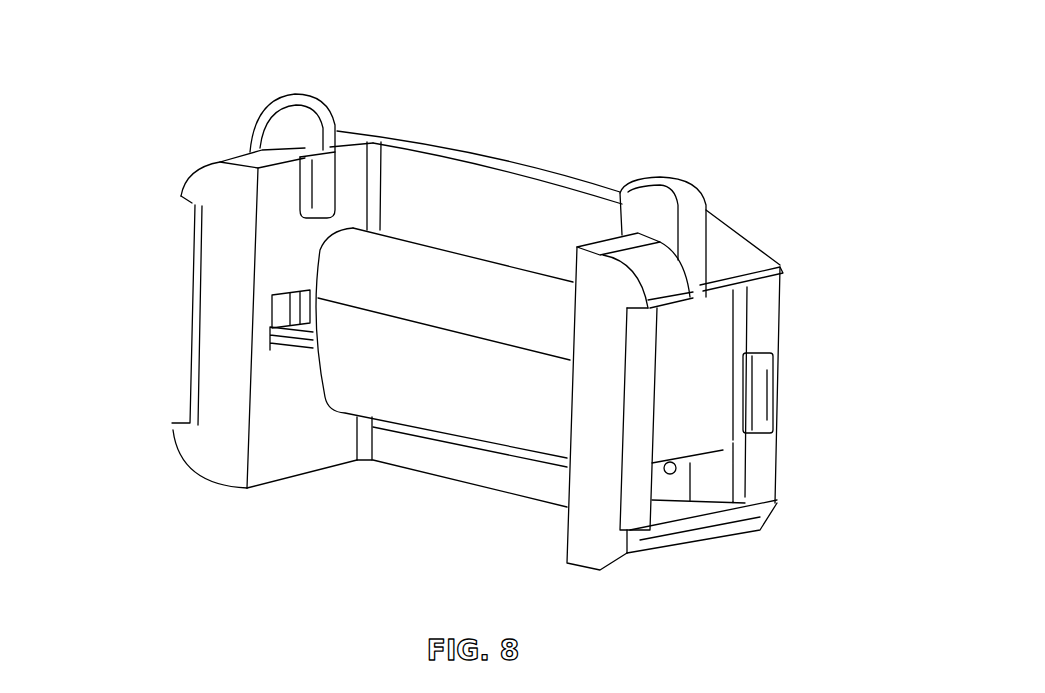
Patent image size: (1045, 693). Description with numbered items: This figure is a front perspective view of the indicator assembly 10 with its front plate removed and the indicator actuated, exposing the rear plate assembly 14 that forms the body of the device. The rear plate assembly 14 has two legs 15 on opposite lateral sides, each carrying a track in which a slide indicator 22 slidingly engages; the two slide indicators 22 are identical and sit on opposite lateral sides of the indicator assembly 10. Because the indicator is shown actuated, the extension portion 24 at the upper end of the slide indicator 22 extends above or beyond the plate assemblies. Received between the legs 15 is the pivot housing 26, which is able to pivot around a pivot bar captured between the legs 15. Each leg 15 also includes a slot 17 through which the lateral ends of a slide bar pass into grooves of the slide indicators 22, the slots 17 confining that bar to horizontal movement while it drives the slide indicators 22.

The indicator assembly 10 is at (707, 152).
The rear plate assembly 14 is at (522, 185).
The legs 15 is at (230, 223).
The slots 17 is at (288, 318).
The slide indicator 22 is at (710, 313).
The extension portion 24 is at (690, 232).
The pivot housing 26 is at (450, 360).